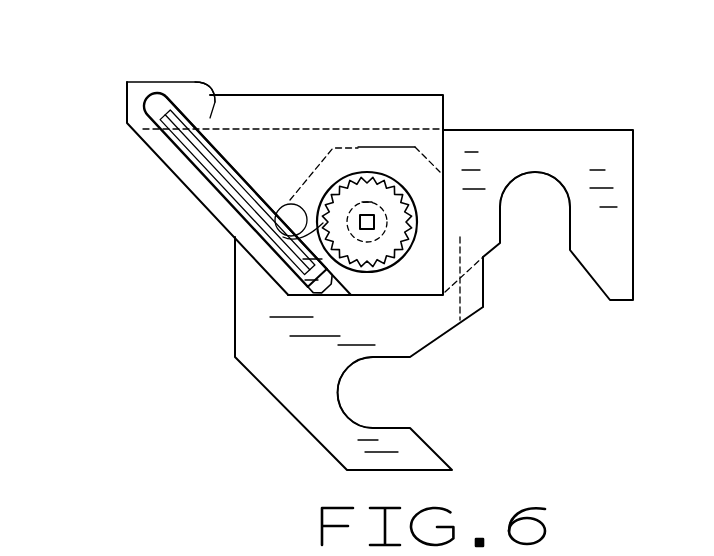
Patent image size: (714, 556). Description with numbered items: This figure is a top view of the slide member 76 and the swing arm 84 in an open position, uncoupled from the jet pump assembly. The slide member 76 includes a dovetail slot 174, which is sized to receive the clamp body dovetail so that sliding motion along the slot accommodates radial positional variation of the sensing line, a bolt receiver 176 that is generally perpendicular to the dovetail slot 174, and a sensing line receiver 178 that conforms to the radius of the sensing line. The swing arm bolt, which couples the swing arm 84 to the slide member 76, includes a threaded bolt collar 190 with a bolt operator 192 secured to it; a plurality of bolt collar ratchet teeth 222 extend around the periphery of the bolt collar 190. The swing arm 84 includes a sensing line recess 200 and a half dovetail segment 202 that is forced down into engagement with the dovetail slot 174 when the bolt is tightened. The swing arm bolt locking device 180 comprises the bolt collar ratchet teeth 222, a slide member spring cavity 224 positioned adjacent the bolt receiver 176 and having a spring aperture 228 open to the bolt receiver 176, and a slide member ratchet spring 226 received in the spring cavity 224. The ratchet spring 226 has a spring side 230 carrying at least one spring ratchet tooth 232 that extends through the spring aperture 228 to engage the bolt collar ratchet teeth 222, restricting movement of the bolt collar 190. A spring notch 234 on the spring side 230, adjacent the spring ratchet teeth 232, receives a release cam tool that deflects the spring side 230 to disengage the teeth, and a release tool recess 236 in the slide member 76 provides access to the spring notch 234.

The slide member 76 is at (287, 150).
The swing arm 84 is at (290, 353).
The dovetail slot 174 is at (268, 106).
The bolt receiver 176 is at (367, 202).
The sensing line receiver 178 is at (547, 175).
The swing arm bolt locking device 180 is at (195, 235).
The bolt collar 190 is at (393, 195).
The bolt operator 192 is at (390, 190).
The sensing line recess 200 is at (348, 405).
The half dovetail segment 202 is at (483, 307).
The bolt collar ratchet teeth 222 is at (372, 210).
The slide member spring cavity 224 is at (208, 170).
The slide member ratchet spring 226 is at (127, 123).
The spring aperture 228 is at (295, 286).
The spring side 230 is at (210, 95).
The spring ratchet teeth 232 is at (330, 263).
The spring notch 234 is at (330, 233).
The release tool recess 236 is at (325, 229).